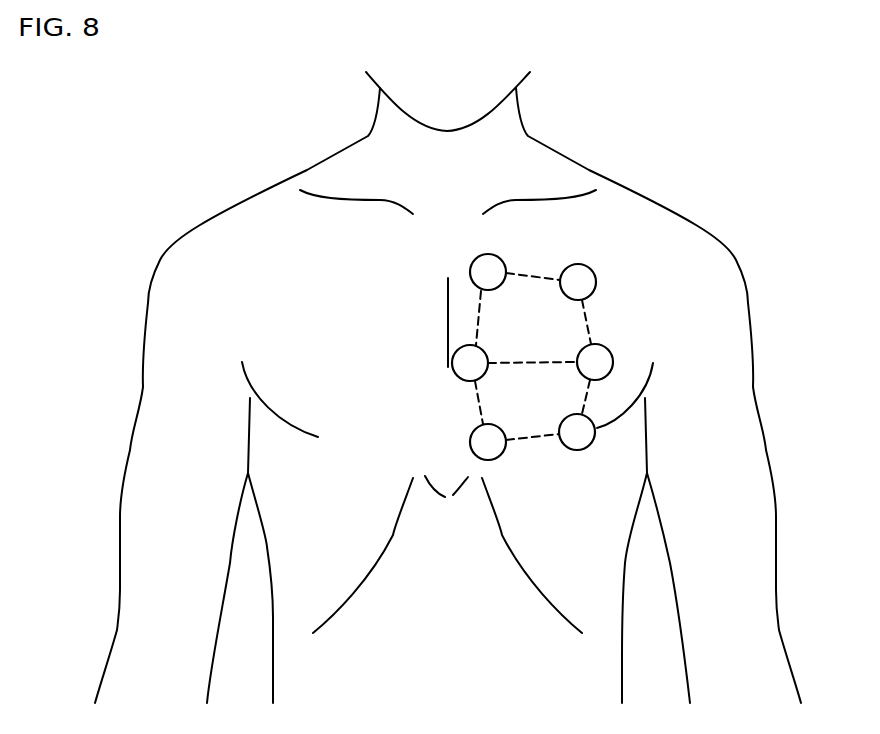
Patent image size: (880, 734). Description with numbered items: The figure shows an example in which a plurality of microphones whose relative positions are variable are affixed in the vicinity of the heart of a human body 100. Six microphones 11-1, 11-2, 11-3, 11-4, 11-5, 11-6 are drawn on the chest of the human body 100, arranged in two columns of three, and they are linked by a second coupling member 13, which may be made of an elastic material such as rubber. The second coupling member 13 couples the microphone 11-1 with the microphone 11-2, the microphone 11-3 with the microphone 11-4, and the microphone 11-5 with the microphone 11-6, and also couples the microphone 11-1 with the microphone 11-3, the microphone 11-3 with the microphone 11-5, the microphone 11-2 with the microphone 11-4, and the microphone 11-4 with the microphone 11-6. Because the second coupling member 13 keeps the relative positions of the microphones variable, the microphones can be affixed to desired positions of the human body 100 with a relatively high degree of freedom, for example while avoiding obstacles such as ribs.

The human body 100 is at (257, 184).
The second coupling member 13 is at (532, 275).
The microphone 11-1 is at (481, 258).
The microphone 11-2 is at (596, 271).
The microphone 11-3 is at (458, 373).
The microphone 11-4 is at (613, 347).
The microphone 11-5 is at (472, 437).
The microphone 11-6 is at (580, 450).